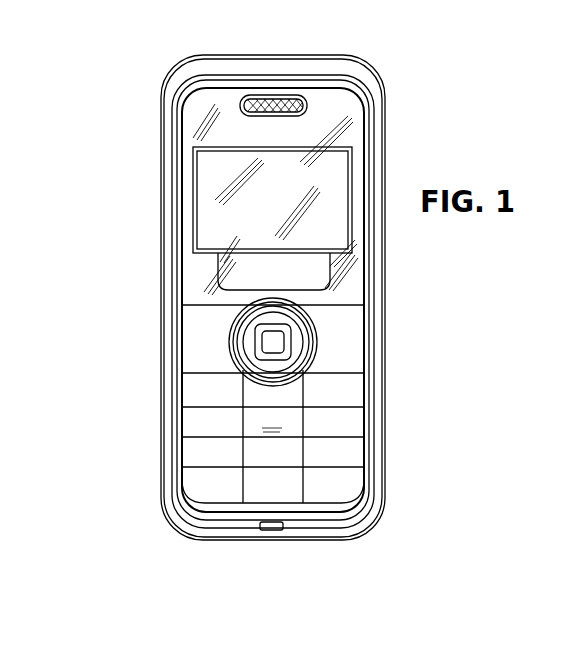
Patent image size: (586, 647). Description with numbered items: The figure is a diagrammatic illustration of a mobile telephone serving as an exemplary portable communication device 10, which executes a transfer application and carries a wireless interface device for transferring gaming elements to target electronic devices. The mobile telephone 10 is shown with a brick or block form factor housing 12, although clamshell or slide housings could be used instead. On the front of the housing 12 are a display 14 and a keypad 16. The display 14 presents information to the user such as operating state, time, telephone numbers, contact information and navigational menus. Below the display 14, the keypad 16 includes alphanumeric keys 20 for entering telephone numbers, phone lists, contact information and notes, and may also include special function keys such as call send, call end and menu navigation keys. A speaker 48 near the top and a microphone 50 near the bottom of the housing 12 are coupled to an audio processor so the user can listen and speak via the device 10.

The portable communication device 10 is at (112, 58).
The housing 12 is at (160, 146).
The display 14 is at (212, 210).
The keypad 16 is at (157, 452).
The alphanumeric keys 20 is at (250, 353).
The speaker 48 is at (256, 94).
The microphone 50 is at (273, 531).